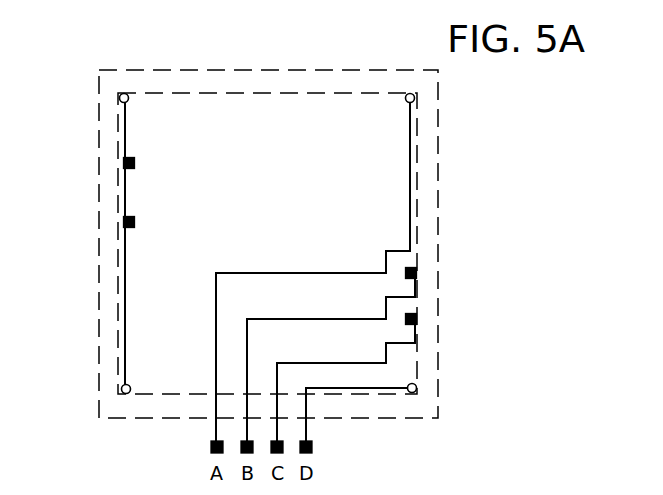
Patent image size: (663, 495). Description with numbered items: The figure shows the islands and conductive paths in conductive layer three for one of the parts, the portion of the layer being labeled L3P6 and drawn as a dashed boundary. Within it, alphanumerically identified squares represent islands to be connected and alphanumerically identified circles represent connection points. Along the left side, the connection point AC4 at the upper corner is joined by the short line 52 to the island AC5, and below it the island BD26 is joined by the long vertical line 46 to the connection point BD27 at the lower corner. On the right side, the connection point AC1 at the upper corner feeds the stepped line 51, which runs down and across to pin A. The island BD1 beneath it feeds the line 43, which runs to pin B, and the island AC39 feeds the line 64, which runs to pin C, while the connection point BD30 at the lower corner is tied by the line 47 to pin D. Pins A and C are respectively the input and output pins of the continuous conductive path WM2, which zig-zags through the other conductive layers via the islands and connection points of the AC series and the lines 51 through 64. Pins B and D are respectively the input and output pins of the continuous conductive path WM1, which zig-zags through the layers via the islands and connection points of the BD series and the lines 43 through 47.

The conductive layer 3 part 6 L3P6 is at (266, 66).
The connection point AC4 is at (127, 102).
The line 52 is at (127, 139).
The island AC5 is at (135, 163).
The island BD26 is at (135, 222).
The line 46 is at (127, 296).
The connection point BD27 is at (121, 389).
The connection point AC1 is at (406, 102).
The line 51 is at (315, 272).
The island BD1 is at (417, 272).
The line 43 is at (323, 318).
The island AC39 is at (417, 319).
The line 64 is at (342, 362).
The line 47 is at (370, 388).
The connection point BD30 is at (417, 386).